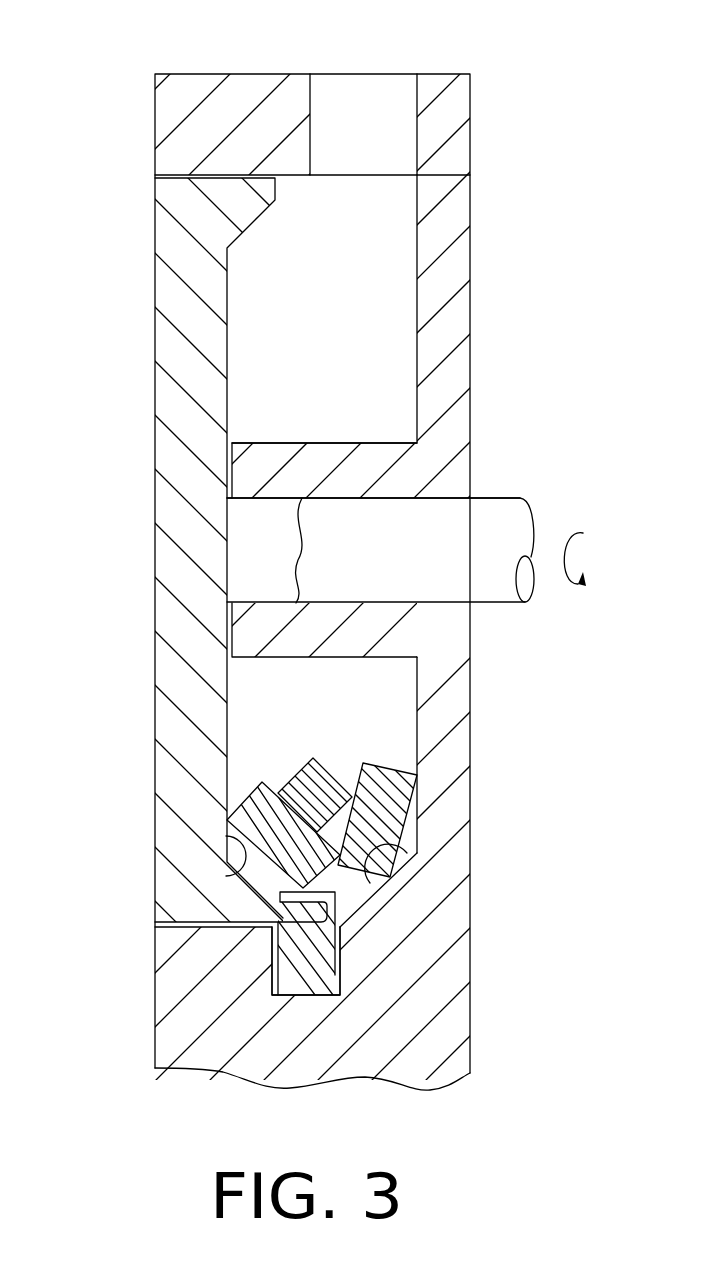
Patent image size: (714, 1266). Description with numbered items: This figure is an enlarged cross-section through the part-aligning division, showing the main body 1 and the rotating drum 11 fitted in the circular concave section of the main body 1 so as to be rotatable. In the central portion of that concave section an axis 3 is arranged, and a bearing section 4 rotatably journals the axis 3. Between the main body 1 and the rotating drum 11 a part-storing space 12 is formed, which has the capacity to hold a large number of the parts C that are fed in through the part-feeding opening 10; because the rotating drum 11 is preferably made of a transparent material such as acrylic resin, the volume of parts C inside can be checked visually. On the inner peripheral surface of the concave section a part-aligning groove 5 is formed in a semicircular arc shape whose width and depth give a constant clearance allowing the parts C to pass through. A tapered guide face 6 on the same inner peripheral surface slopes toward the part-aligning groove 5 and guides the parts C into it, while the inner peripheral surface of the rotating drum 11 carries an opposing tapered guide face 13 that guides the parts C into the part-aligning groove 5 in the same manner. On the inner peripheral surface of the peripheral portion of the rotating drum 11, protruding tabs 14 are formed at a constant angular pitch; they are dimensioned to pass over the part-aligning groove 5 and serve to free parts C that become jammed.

The main body 1 is at (462, 252).
The axis 3 is at (503, 513).
The bearing section 4 is at (317, 461).
The part-aligning groove 5 is at (327, 970).
The tapered guide face 6 is at (407, 853).
The part-feeding opening 10 is at (378, 97).
The rotating drum 11 is at (165, 386).
The part-storing space 12 is at (345, 322).
The tapered guide face 13 is at (226, 838).
The protruding tab 14 is at (302, 912).
The parts C is at (262, 794).